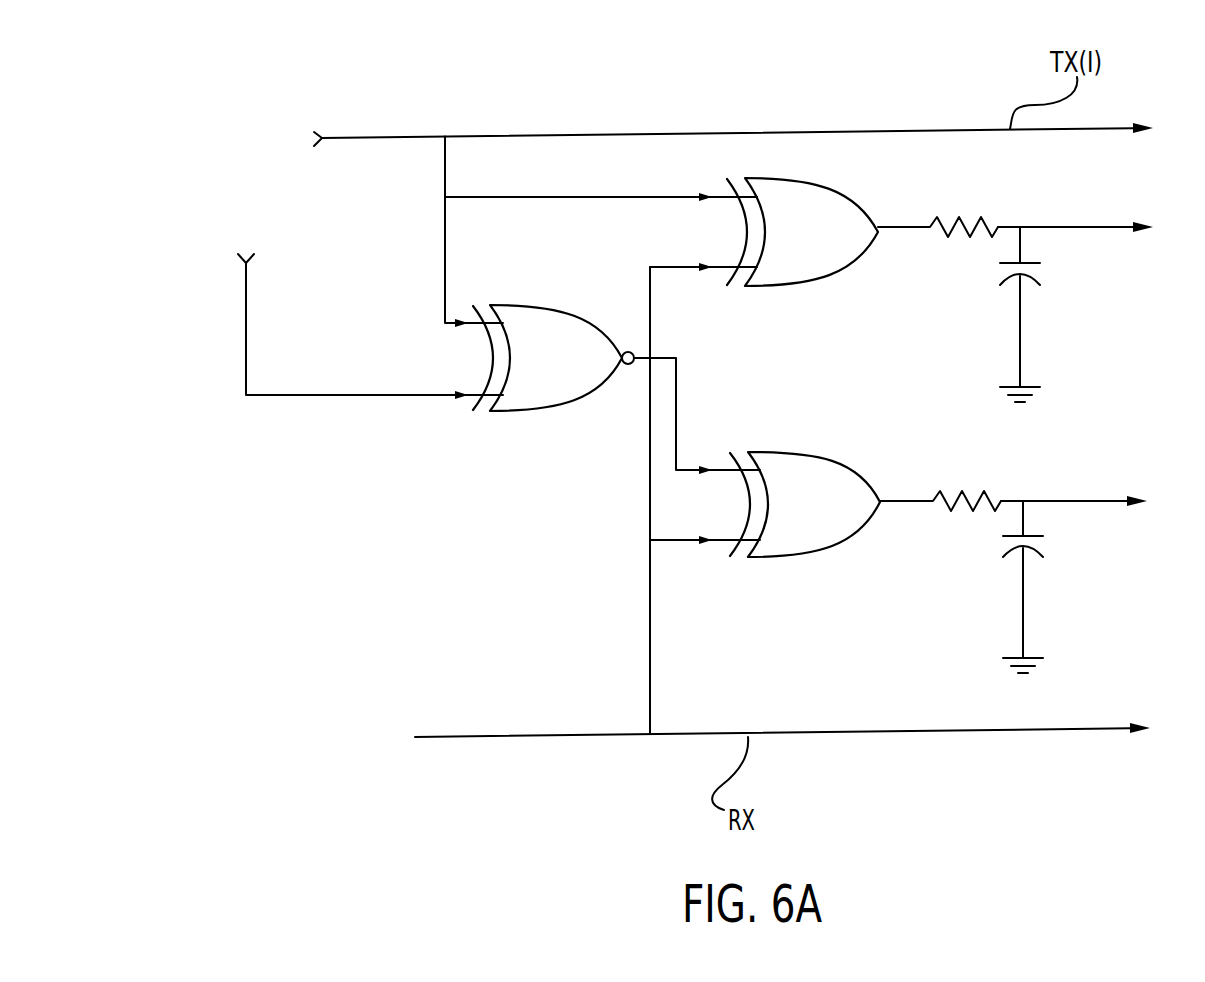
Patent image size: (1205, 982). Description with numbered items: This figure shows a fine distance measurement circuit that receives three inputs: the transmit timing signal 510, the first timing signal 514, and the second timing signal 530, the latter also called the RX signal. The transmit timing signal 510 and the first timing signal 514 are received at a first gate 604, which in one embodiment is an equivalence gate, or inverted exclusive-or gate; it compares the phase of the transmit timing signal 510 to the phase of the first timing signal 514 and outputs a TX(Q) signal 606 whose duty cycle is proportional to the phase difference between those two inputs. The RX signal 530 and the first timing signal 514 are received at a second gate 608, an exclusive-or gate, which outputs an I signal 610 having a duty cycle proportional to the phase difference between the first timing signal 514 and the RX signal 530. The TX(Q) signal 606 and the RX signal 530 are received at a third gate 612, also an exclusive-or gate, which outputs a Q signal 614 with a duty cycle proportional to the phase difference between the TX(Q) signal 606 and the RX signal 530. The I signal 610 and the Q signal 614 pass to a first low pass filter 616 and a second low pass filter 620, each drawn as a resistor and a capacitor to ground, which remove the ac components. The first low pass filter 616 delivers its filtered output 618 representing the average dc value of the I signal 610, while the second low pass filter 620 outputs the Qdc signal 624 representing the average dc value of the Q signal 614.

The transmit timing signal 510 is at (247, 308).
The first timing signal 514 is at (350, 138).
The second timing signal 530 is at (450, 738).
The first gate 604 is at (573, 307).
The TX(Q) signal 606 is at (675, 390).
The second gate 608 is at (863, 250).
The I signal 610 is at (890, 228).
The third gate 612 is at (865, 520).
The Q signal 614 is at (893, 500).
The first low pass filter 616 is at (980, 259).
The first output 618 is at (1112, 228).
The second low pass filter 620 is at (981, 532).
The Qdc signal 624 is at (1115, 500).